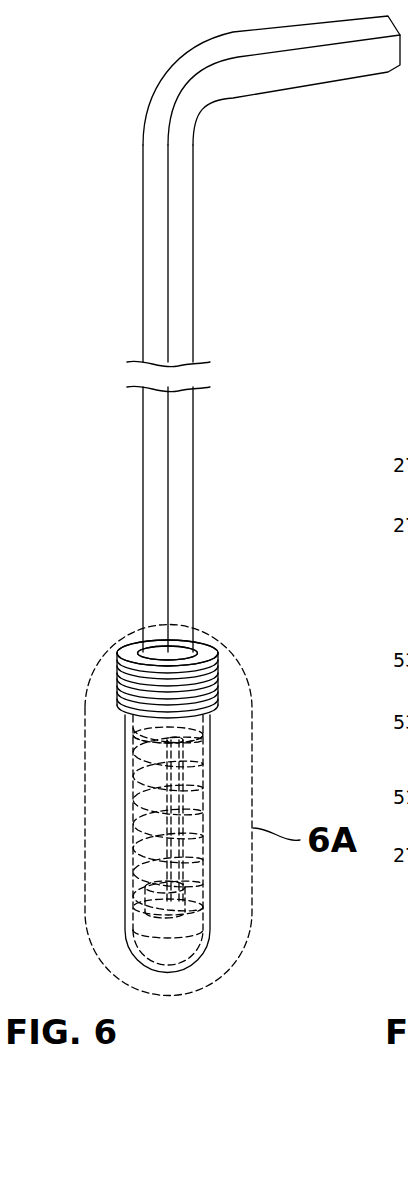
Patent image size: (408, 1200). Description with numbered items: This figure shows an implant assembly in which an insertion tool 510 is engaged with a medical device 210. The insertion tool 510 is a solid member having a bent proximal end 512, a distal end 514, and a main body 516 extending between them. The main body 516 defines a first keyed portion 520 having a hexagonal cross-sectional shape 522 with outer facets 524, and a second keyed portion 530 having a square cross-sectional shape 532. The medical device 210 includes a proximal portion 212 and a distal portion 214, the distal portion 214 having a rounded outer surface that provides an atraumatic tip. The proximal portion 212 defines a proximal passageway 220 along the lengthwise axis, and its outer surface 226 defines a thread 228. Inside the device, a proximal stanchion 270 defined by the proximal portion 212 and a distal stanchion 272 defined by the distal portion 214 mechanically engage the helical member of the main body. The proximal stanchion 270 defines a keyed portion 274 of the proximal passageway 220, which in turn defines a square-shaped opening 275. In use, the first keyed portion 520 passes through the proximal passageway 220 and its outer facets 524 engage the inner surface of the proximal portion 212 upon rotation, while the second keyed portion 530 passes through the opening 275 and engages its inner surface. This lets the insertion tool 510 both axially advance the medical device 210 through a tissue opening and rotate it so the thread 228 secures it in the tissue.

The insertion tool 510 is at (143, 270).
The proximal end 512 is at (196, 53).
The distal end 514 is at (152, 891).
The main body 516 is at (143, 435).
The first keyed portion 520 is at (208, 517).
The hexagonal cross-sectional shape 522 is at (200, 440).
The outer facets 524 is at (182, 315).
The medical device 210 is at (119, 756).
The proximal portion 212 is at (214, 679).
The distal portion 214 is at (182, 957).
The proximal passageway 220 is at (193, 648).
The outer surface 226 is at (213, 655).
The thread 228 is at (221, 693).
The proximal stanchion 270 is at (195, 727).
The distal stanchion 272 is at (205, 930).
The keyed portion 274 is at (140, 735).
The square-shaped opening 275 is at (135, 770).
The second keyed portion 530 is at (203, 827).
The square cross-sectional shape 532 is at (203, 858).